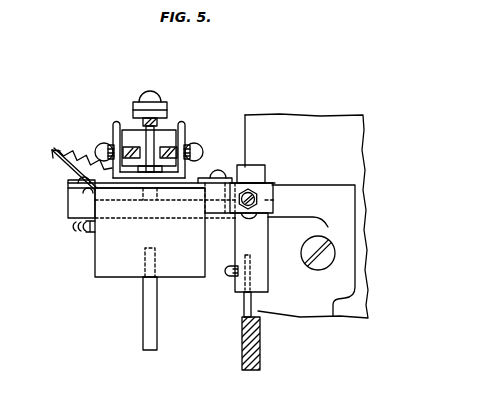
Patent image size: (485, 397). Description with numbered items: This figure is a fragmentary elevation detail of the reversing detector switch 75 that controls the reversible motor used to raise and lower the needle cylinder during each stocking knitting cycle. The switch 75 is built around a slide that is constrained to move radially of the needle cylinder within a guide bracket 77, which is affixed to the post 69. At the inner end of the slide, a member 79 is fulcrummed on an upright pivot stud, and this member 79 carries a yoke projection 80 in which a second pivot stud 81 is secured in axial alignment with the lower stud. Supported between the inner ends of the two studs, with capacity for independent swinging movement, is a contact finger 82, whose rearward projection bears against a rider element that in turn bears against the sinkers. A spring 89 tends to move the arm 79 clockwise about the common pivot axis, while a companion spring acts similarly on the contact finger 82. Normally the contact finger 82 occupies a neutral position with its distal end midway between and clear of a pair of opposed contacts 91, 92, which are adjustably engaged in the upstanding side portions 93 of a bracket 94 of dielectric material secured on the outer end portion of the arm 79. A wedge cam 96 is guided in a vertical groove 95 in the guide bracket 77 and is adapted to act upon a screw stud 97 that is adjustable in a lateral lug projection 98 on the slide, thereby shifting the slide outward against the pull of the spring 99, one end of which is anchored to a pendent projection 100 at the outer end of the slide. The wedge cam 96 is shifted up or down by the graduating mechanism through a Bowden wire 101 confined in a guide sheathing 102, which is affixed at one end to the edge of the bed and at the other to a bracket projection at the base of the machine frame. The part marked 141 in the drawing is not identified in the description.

The frame plate 69 is at (350, 143).
The switch assembly 75 is at (128, 78).
The mounting plate 77 is at (337, 208).
The base plate 79 is at (200, 177).
The cap 80 is at (138, 124).
The knob 81 is at (148, 92).
The plunger 82 is at (152, 150).
The lever arm 89 is at (74, 150).
The roller 91 is at (199, 150).
The roller 92 is at (102, 160).
The posts 93 is at (116, 127).
The housing top 94 is at (126, 186).
The bearing notch 95 is at (253, 218).
The bracket 96 is at (262, 236).
The nut 97 is at (262, 199).
The block 98 is at (263, 180).
The adjusting screw 99 is at (78, 235).
The housing 100 is at (107, 268).
The shaft 101 is at (245, 312).
The rubber bumper 102 is at (262, 350).
The rod 141 is at (143, 343).